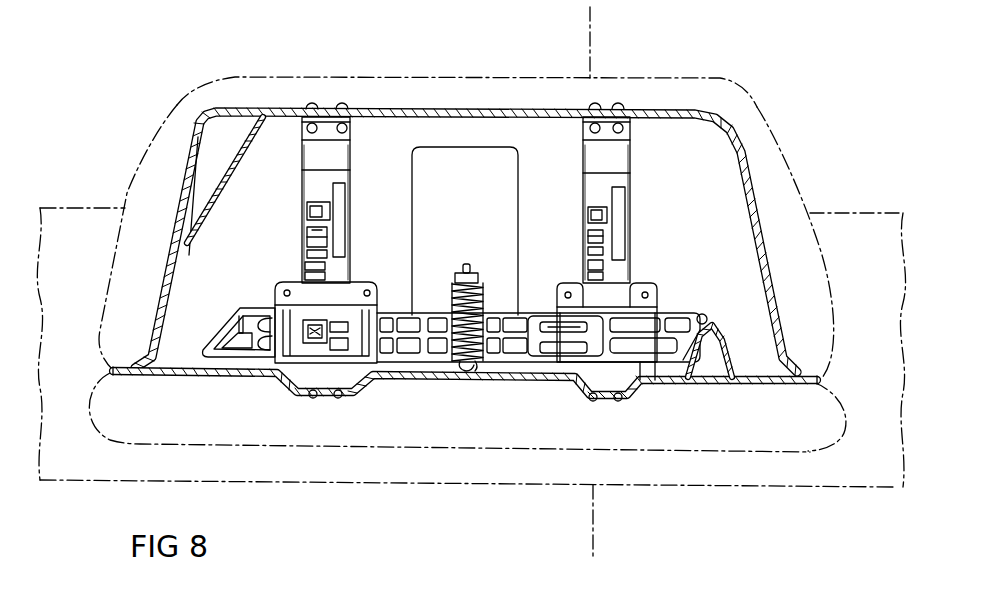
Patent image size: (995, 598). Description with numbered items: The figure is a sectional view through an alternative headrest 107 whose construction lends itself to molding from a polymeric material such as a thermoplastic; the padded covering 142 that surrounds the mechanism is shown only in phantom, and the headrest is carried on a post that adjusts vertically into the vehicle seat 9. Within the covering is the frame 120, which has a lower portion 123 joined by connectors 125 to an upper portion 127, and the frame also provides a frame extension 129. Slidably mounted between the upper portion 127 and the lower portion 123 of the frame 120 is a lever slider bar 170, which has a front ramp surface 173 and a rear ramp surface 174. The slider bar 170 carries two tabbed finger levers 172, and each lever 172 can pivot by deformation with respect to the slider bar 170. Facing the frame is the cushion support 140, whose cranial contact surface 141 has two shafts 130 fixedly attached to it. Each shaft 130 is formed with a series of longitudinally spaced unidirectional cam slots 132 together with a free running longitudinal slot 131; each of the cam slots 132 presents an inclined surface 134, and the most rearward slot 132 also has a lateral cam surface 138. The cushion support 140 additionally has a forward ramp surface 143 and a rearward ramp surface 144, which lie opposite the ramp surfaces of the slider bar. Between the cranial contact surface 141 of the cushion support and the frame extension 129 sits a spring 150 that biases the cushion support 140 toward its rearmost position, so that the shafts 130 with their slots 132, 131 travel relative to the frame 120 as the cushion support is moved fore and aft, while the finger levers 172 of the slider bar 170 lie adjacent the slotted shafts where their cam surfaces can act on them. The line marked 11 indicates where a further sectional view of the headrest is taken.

The vehicle seat 9 is at (556, 512).
The section line 11- 11 is at (556, 557).
The headrest 107 is at (764, 98).
The frame 120 is at (357, 275).
The lower portion 123 is at (680, 302).
The connectors 125 is at (383, 293).
The upper portion 127 is at (380, 300).
The frame extension 129 is at (458, 262).
The shafts 130 is at (292, 229).
The free running longitudinal slot 131 is at (336, 150).
The unidirectional cam slots 132 is at (305, 212).
The inclined surface 134 is at (333, 243).
The lateral cam surface 138 is at (322, 213).
The cushion support 140 is at (790, 288).
The cranial contact surface 141 is at (420, 380).
The padded covering 142 is at (810, 440).
The forward ramp surface 143 is at (706, 314).
The rearward ramp surface 144 is at (218, 205).
The spring 150 is at (480, 285).
The lever slider bar 170 is at (652, 350).
The tabbed finger lever 172 is at (555, 325).
The front ramp surface 173 is at (697, 378).
The rear ramp surface 174 is at (220, 328).